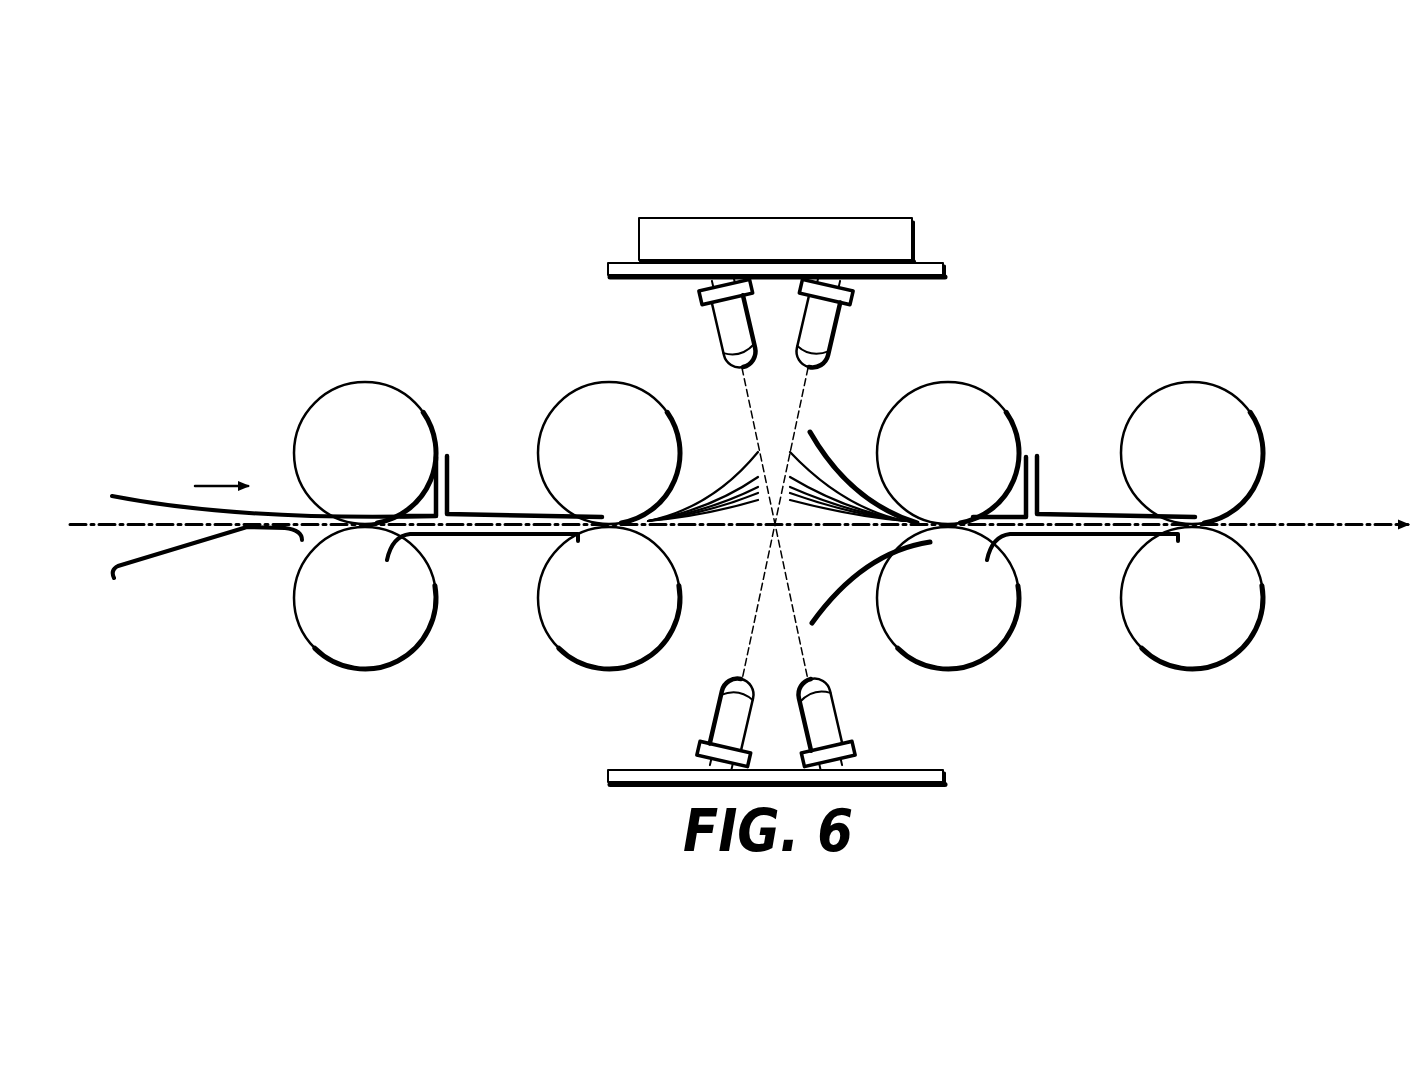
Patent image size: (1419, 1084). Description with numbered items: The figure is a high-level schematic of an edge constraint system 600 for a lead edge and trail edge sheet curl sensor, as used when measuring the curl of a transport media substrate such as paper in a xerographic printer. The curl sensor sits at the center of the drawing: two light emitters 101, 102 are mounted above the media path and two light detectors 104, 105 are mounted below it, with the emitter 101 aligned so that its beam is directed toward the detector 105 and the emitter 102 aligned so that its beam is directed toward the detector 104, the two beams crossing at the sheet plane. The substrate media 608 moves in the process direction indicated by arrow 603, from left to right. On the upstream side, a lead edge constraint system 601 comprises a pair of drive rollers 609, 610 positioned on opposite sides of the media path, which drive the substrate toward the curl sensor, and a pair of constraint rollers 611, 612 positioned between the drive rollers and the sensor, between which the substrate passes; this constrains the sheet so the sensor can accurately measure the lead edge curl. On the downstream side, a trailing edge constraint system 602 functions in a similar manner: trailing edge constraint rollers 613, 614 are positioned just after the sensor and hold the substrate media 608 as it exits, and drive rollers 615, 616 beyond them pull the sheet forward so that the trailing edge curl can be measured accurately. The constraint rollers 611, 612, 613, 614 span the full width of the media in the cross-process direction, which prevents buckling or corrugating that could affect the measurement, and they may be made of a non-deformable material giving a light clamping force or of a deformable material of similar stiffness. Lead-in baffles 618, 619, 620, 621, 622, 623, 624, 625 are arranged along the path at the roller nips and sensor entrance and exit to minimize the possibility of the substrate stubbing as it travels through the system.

The edge constraint system 600 is at (986, 226).
The light emitter 101 is at (712, 326).
The light emitter 102 is at (843, 326).
The light detector 104 is at (712, 722).
The light detector 105 is at (842, 722).
The lead edge constraint system 601 is at (692, 696).
The trailing edge constraint system 602 is at (1270, 695).
The process direction arrow 603 is at (218, 484).
The substrate media 608 is at (722, 478).
The drive roller 609 is at (386, 386).
The drive roller 610 is at (410, 663).
The constraint roller 611 is at (590, 386).
The constraint roller 612 is at (652, 662).
The trailing edge constraint roller 613 is at (968, 386).
The trailing edge constraint roller 614 is at (995, 662).
The drive roller 615 is at (1175, 386).
The drive roller 616 is at (1237, 662).
The lead-in baffle 618 is at (130, 495).
The lead-in baffle 619 is at (132, 565).
The lead-in baffle 620 is at (472, 508).
The lead-in baffle 621 is at (453, 534).
The lead-in baffle 622 is at (826, 451).
The lead-in baffle 623 is at (840, 590).
The lead-in baffle 624 is at (1083, 512).
The lead-in baffle 625 is at (1073, 534).